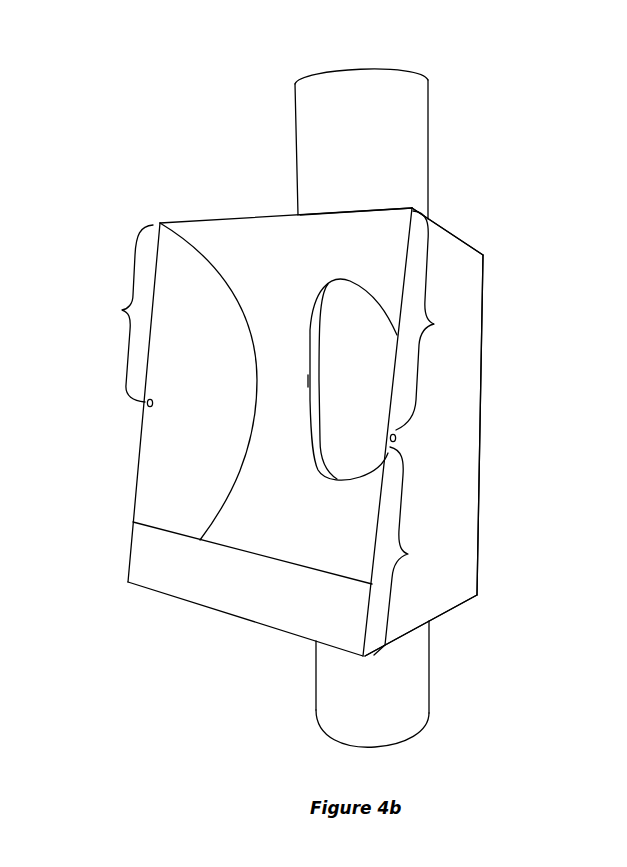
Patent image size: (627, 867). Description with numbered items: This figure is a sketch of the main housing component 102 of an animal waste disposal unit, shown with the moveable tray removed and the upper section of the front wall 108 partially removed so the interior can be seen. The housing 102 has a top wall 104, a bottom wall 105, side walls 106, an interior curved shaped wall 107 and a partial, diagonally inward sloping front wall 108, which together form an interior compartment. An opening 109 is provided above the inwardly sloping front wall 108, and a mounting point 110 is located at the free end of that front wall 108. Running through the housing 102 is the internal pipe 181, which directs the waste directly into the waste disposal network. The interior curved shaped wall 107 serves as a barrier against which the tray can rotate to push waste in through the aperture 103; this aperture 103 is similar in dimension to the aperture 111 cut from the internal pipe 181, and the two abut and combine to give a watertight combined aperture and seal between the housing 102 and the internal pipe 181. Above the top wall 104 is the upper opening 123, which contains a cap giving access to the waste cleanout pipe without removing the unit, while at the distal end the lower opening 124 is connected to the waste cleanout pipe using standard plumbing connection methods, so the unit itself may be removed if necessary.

The main housing component 102 is at (210, 182).
The aperture 103 is at (308, 381).
The top wall 104 is at (343, 212).
The bottom wall 105 is at (297, 640).
The side walls 106 is at (453, 282).
The interior curved shaped wall 107 is at (172, 503).
The front wall 108 is at (325, 600).
The opening 109 is at (122, 310).
The mounting point 110 is at (147, 404).
The aperture 111 is at (190, 447).
The upper opening 123 is at (333, 68).
The lower opening 124 is at (350, 752).
The internal pipe 181 is at (367, 380).